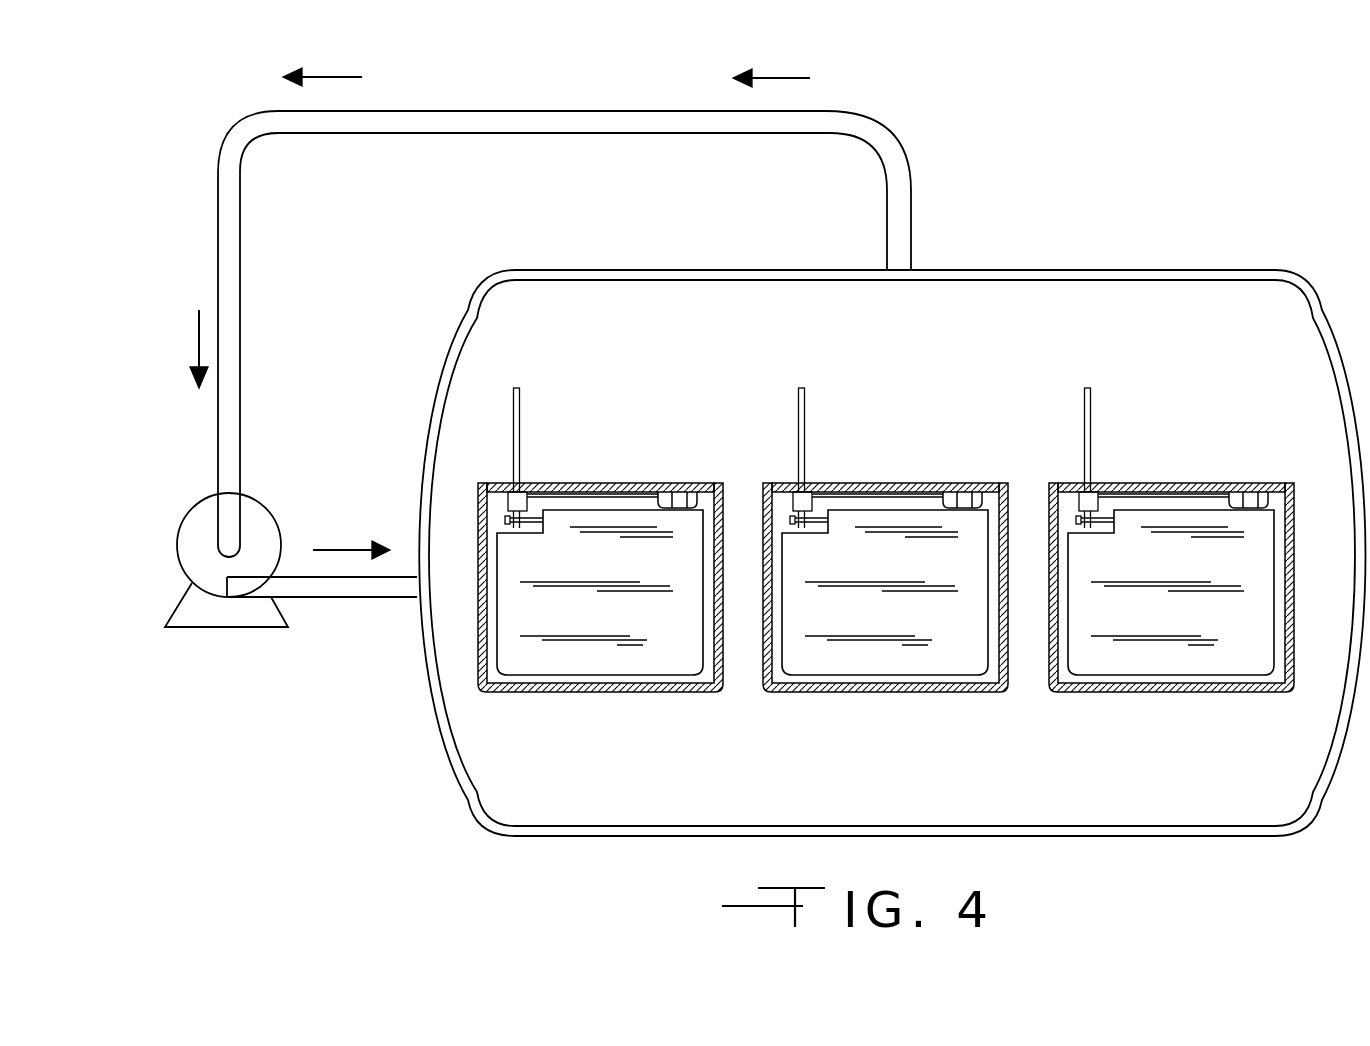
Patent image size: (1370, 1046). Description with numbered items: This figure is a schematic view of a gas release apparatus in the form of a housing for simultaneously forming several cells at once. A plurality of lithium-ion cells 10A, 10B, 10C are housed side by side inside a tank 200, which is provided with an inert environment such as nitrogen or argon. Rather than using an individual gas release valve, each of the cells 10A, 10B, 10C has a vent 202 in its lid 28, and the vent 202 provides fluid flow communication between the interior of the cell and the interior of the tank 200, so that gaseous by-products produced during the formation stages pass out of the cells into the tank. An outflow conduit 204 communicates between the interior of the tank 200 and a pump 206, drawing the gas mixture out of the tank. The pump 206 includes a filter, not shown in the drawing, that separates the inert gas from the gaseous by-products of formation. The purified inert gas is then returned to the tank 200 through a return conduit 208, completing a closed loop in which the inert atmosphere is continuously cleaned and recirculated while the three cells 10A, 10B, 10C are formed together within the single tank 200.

The tank 200 is at (1247, 268).
The outflow conduit 204 is at (911, 190).
The pump 206 is at (258, 525).
The conduit 208 is at (327, 600).
The lid 28 is at (592, 483).
The vent 202 is at (693, 483).
The lithium-ion cell 10A is at (605, 660).
The lithium-ion cell 10B is at (870, 650).
The lithium-ion cell 10C is at (1173, 657).